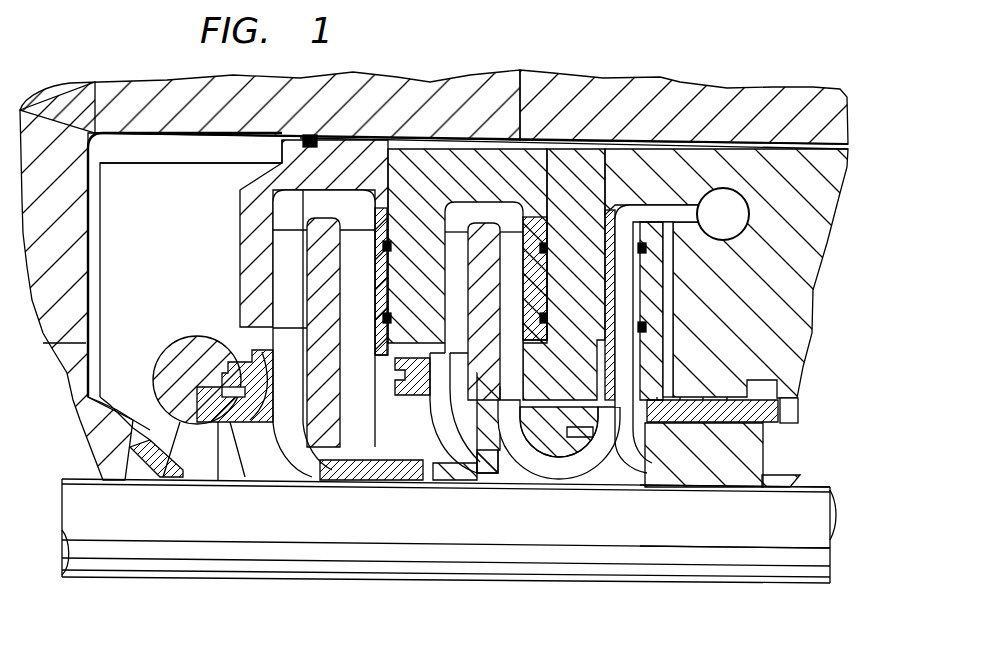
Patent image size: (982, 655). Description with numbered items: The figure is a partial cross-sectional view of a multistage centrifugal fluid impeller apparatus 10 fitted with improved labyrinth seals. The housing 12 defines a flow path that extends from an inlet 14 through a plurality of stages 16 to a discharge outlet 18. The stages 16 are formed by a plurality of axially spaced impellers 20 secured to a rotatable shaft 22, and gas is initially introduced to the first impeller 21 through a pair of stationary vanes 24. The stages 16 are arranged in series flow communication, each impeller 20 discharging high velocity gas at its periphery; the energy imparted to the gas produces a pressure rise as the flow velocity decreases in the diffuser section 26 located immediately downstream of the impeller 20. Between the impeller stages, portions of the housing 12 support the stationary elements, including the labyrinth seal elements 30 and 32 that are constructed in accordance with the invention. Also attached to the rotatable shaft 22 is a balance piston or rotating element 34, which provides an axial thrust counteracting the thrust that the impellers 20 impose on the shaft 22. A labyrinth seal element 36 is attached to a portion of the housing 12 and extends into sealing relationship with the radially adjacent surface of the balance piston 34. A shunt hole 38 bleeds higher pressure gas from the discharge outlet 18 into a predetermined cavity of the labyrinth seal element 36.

The centrifugal fluid impeller apparatus 10 is at (682, 57).
The housing 12 is at (527, 82).
The inlet 14 is at (143, 150).
The stages 16 is at (300, 553).
The discharge outlet 18 is at (737, 227).
The impellers 20 is at (262, 450).
The first impeller 21 is at (300, 487).
The rotatable shaft 22 is at (712, 529).
The stationary vanes 24 is at (167, 160).
The diffuser section 26 is at (277, 343).
The labyrinth seal element 30 is at (447, 452).
The labyrinth seal element 32 is at (487, 473).
The balance piston 34 is at (717, 467).
The labyrinth seal element 36 is at (773, 427).
The shunt hole 38 is at (670, 310).